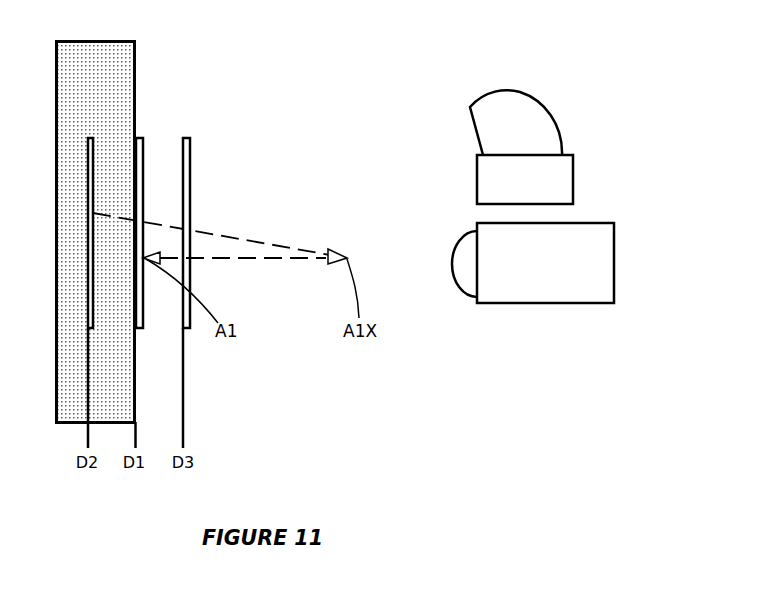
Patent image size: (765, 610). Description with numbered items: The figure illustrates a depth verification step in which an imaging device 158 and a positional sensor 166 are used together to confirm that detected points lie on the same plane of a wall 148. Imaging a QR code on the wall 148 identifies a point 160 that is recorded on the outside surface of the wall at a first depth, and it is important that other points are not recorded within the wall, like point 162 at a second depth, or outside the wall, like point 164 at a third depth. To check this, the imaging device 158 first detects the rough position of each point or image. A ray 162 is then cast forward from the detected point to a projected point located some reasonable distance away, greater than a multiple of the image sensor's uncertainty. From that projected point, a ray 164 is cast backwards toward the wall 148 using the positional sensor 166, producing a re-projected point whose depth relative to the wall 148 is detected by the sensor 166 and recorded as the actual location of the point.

The first wall 148 is at (142, 70).
The point 160 is at (143, 143).
The point within the wall / ray cast forward 162 is at (96, 141).
The point outside the wall / ray cast backwards 164 is at (192, 141).
The imaging device 158 is at (552, 105).
The positional sensor 166 is at (614, 223).